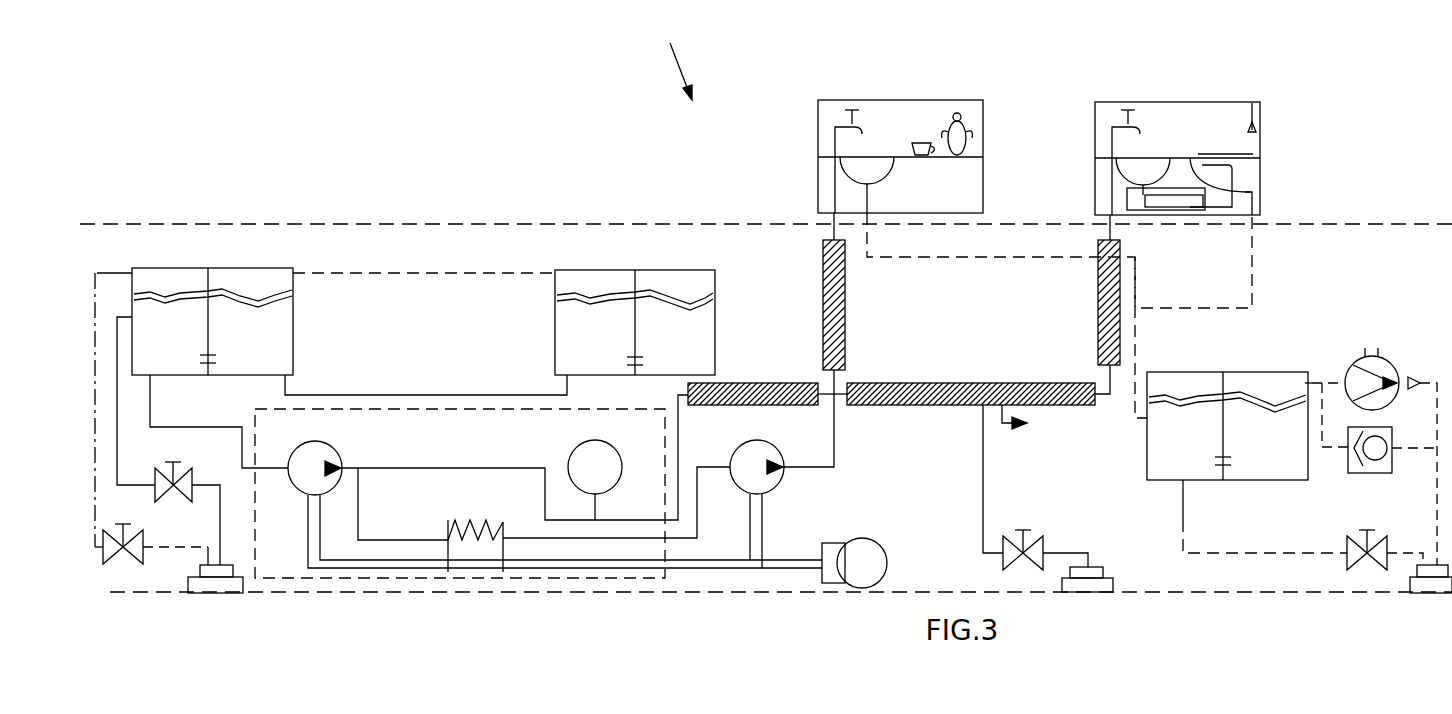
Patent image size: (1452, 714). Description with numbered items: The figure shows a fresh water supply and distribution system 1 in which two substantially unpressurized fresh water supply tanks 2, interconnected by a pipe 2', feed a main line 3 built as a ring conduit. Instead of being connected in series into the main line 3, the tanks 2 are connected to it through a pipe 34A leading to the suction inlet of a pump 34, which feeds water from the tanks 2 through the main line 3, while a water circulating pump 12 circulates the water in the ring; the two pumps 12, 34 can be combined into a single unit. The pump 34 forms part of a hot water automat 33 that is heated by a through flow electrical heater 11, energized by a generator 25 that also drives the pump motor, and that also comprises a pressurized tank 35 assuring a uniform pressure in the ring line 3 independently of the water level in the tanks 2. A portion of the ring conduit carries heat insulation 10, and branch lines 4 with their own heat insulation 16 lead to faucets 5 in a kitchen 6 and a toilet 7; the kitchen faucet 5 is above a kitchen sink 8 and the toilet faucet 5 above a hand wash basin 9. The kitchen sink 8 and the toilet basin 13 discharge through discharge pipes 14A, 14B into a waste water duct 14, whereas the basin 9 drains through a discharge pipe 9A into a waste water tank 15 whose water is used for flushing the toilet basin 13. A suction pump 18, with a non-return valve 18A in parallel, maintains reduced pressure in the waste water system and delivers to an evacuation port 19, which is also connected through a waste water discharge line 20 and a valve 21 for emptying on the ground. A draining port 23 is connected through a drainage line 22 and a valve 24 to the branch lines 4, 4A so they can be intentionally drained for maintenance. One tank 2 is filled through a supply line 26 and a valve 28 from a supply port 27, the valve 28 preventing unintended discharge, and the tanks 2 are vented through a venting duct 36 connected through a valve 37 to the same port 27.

The fresh water supply and distribution system 1 is at (673, 58).
The fresh water supply tank 2 is at (423, 305).
The pipe 2' is at (426, 366).
The main line 3 is at (834, 455).
The branch line 4 is at (835, 188).
The branch line 4A is at (918, 407).
The faucet 5 is at (864, 123).
The kitchen 6 is at (932, 100).
The toilet 7 is at (1225, 102).
The kitchen sink 8 is at (878, 160).
The hand wash basin 9 is at (1158, 160).
The discharge pipe 9A is at (1153, 197).
The heat insulation 10 is at (770, 383).
The heater 11 is at (482, 547).
The pump 12 is at (777, 488).
The toilet basin 13 is at (1248, 173).
The waste water duct 14 is at (1253, 258).
The discharge pipe 14A is at (873, 193).
The discharge pipe 14B is at (1265, 197).
The waste water tank 15 is at (1190, 210).
The heat insulation 16 is at (1098, 325).
The suction pump 18 is at (1397, 370).
The non-return valve 18A is at (1383, 473).
The evacuation port 19 is at (1432, 583).
The waste water discharge line 20 is at (1232, 557).
The valve 21 is at (1377, 563).
The drainage line 22 is at (985, 483).
The draining port 23 is at (1092, 585).
The valve 24 is at (1045, 545).
The generator 25 is at (832, 578).
The supply line 26 is at (113, 330).
The supply port 27 is at (225, 580).
The valve 28 is at (192, 478).
The hot water automat 33 is at (608, 578).
The pump 34 is at (340, 458).
The pipe 34A is at (183, 427).
The pressurized tank 35 is at (612, 442).
The venting duct 36 is at (95, 280).
The valve 37 is at (140, 552).